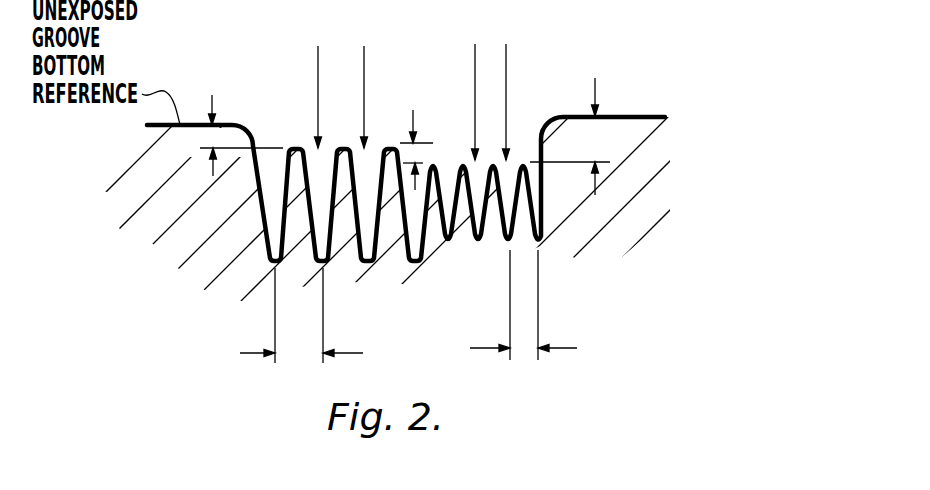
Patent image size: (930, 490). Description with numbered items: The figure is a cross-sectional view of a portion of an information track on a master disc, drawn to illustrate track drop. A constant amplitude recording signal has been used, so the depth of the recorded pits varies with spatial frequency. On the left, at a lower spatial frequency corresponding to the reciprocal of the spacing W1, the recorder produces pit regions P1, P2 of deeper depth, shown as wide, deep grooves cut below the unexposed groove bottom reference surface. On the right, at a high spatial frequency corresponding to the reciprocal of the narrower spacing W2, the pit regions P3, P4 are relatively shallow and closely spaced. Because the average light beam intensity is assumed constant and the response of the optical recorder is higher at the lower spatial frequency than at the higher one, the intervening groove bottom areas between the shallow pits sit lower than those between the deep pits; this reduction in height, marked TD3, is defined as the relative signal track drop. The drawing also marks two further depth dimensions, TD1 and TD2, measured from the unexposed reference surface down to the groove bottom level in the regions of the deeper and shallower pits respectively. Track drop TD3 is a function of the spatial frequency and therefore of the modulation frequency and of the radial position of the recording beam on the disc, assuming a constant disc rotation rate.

The first groove top depth TD1 is at (239, 122).
The second groove top depth TD2 is at (571, 136).
The relative signal track drop TD3 is at (414, 135).
The pit region P1 is at (324, 80).
The pit region P2 is at (370, 80).
The pit region P3 is at (482, 85).
The pit region P4 is at (512, 85).
The spacing at lower spatial frequency W1 is at (301, 319).
The spacing at high spatial frequency W2 is at (523, 309).